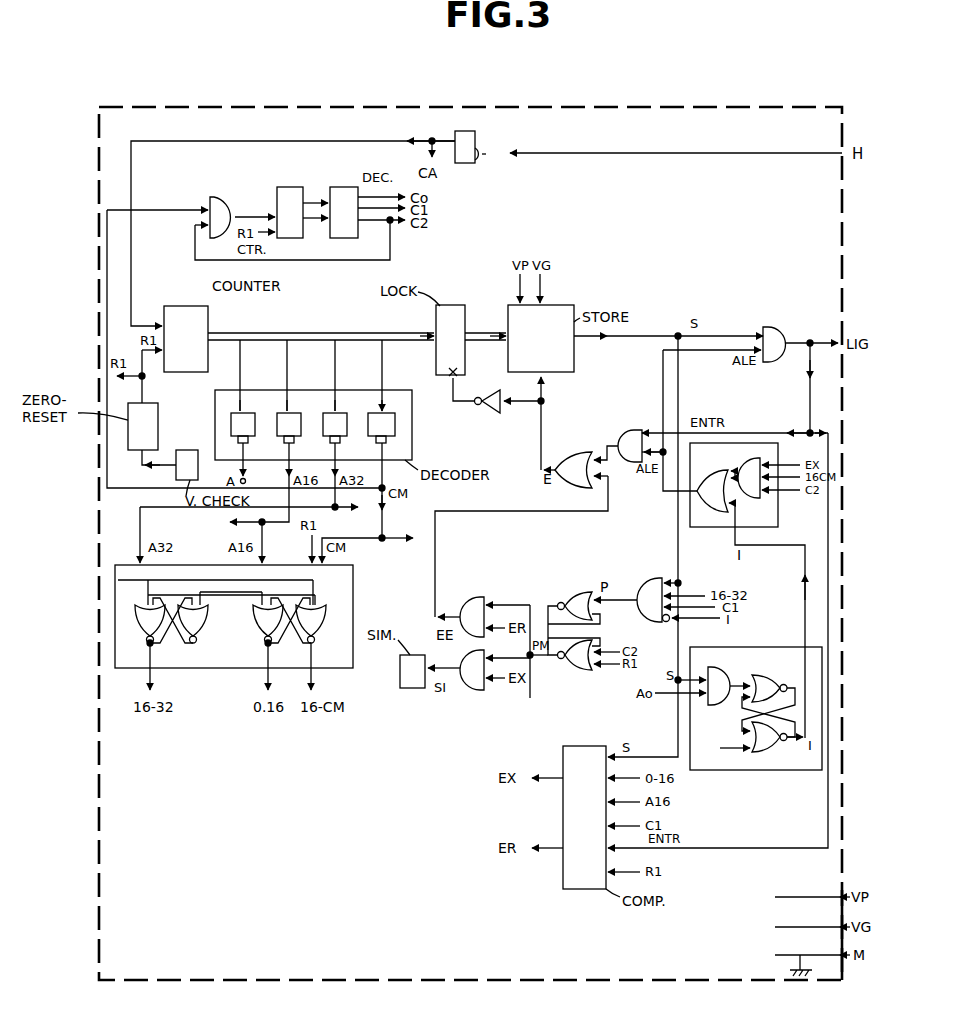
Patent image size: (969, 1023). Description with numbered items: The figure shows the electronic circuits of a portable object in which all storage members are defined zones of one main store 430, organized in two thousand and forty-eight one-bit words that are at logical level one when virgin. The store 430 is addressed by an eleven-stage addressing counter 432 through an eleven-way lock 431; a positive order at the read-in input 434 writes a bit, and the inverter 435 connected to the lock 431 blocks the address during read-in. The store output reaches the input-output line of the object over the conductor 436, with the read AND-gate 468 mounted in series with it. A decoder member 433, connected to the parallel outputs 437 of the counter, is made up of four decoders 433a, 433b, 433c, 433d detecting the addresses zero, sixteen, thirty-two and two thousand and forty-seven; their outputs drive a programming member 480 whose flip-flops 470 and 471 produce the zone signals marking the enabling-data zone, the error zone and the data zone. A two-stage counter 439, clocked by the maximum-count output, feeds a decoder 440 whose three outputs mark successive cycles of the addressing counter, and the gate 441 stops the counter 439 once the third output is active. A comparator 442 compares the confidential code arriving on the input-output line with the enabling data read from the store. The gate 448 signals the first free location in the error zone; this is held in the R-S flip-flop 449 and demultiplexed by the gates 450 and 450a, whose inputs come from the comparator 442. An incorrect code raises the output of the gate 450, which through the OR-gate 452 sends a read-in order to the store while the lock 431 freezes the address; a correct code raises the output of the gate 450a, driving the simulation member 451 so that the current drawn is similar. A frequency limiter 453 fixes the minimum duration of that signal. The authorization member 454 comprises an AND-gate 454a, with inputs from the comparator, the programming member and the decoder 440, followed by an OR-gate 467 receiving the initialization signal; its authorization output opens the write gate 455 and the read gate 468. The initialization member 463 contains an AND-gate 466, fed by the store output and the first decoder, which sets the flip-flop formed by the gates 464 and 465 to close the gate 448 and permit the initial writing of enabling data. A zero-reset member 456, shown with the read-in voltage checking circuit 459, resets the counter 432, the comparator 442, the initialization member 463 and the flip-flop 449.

The frequency limiter 453 is at (478, 142).
The gate 441 is at (222, 198).
The two-stage counter 439 is at (290, 188).
The decoder 440 is at (347, 192).
The addressing counter 432 is at (187, 306).
The parallel outputs 437 is at (287, 340).
The lock 431 is at (452, 306).
The store 430 is at (574, 306).
The conductor 436 is at (682, 322).
The AND-gate 468 is at (770, 327).
The decoder 433a is at (250, 413).
The decoder 433b is at (296, 413).
The decoder 433c is at (342, 413).
The decoder 433d is at (390, 413).
The decoder member 433 is at (340, 413).
The zero-reset member 456 is at (158, 410).
The circuit for checking the read-in voltage 459 is at (188, 456).
The read-in input 434 is at (546, 401).
The inverter 435 is at (493, 414).
The writing gate 455 is at (634, 431).
The OR-gate 452 is at (574, 485).
The AND-gate 454a is at (738, 470).
The member for control of authorization of writing and/or reading 454 is at (759, 590).
The OR-gate 467 is at (706, 512).
The gate 448 is at (645, 582).
The flip-flop R-S 449 is at (585, 636).
The gate 450 is at (472, 598).
The gate 450a is at (470, 690).
The simulation member 451 is at (412, 688).
The programming member 480 is at (257, 616).
The flip-flop 470 is at (170, 643).
The flip-flop 471 is at (290, 643).
The initialization member 463 is at (738, 729).
The flip-flop 464 is at (768, 676).
The AND-gate 466 is at (714, 705).
The flip-flop 465 is at (762, 748).
The comparator 442 is at (592, 890).